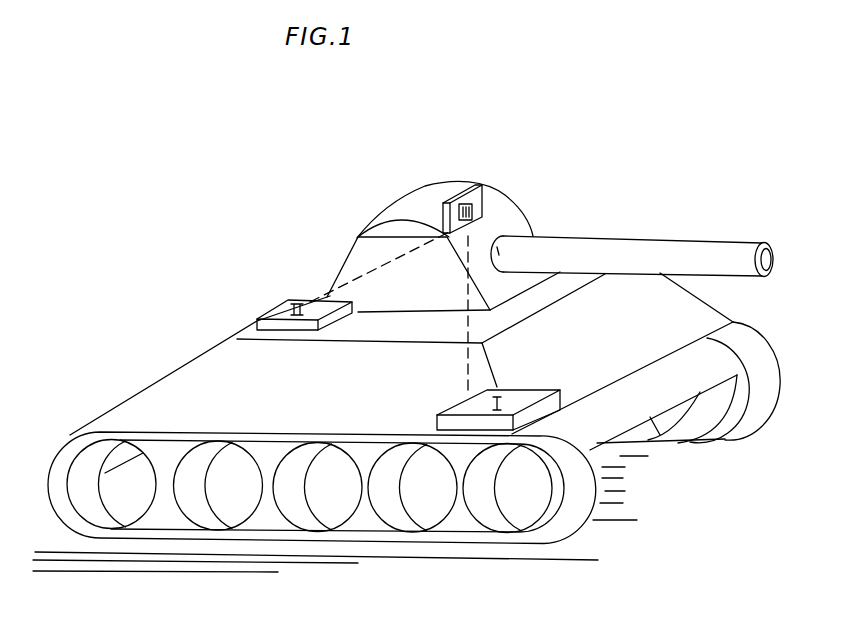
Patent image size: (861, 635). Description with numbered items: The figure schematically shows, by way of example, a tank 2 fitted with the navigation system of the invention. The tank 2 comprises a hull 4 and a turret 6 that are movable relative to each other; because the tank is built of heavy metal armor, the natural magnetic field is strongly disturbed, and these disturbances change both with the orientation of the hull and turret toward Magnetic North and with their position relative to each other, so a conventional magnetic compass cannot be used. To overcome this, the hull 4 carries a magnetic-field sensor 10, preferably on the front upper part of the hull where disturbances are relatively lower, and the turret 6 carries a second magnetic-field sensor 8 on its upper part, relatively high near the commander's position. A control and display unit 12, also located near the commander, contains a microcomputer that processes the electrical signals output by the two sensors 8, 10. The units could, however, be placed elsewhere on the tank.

The tank 2 is at (393, 545).
The hull 4 is at (166, 399).
The turret 6 is at (563, 284).
The magnetic-field sensor 8 is at (285, 313).
The magnetic-field sensor 10 is at (538, 395).
The control and display unit 12 is at (478, 203).